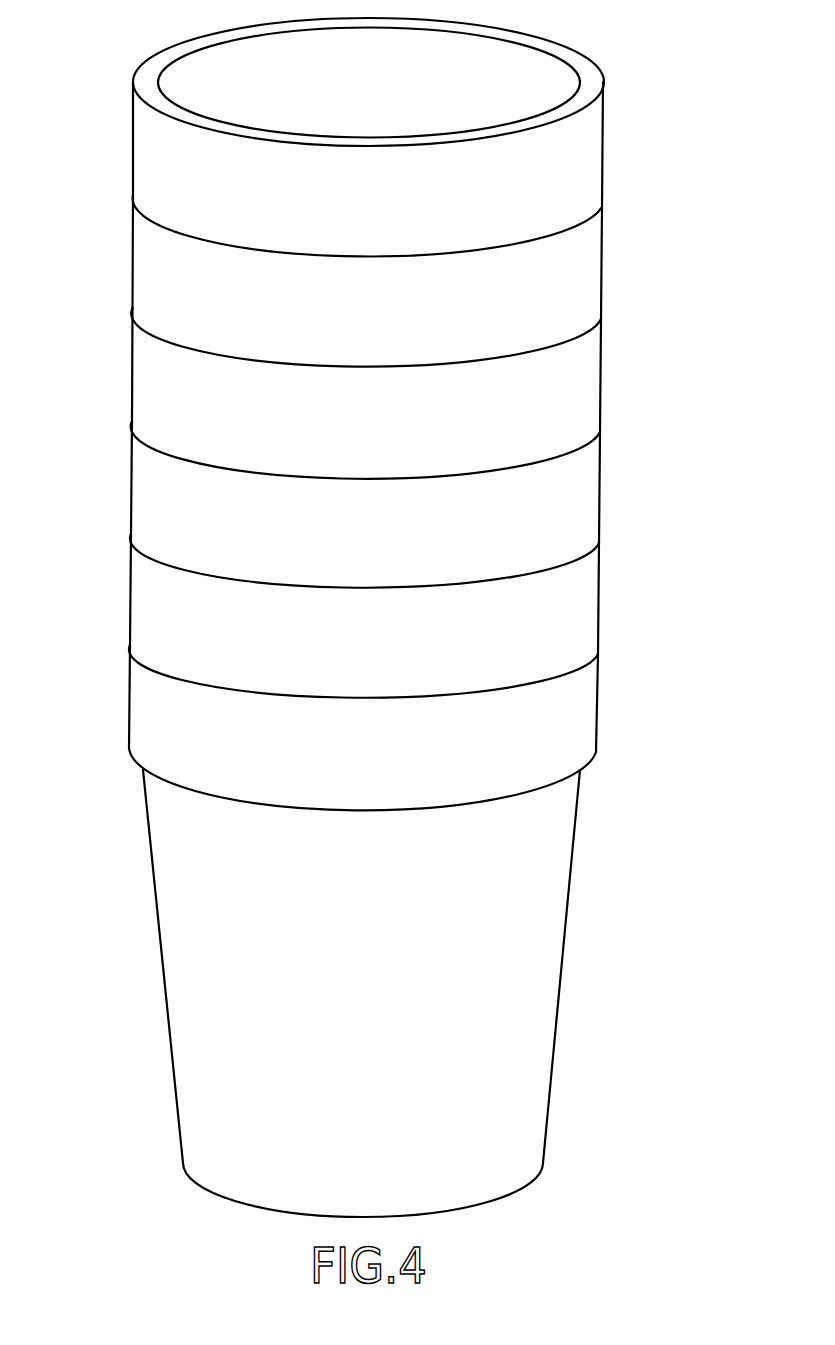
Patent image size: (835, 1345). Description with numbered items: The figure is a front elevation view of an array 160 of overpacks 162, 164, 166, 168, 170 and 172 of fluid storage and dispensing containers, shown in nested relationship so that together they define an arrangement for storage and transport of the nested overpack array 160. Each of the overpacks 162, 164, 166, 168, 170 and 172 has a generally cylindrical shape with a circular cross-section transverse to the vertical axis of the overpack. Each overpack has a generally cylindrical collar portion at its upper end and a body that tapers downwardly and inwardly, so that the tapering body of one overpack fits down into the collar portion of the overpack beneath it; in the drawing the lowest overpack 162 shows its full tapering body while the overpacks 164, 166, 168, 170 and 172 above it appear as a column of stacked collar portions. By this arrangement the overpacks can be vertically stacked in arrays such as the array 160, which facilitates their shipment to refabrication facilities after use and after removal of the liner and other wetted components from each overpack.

The array 160 is at (642, 72).
The overpack 162 is at (200, 1002).
The overpack 164 is at (163, 605).
The overpack 166 is at (148, 507).
The overpack 168 is at (157, 391).
The overpack 170 is at (159, 275).
The overpack 172 is at (165, 163).